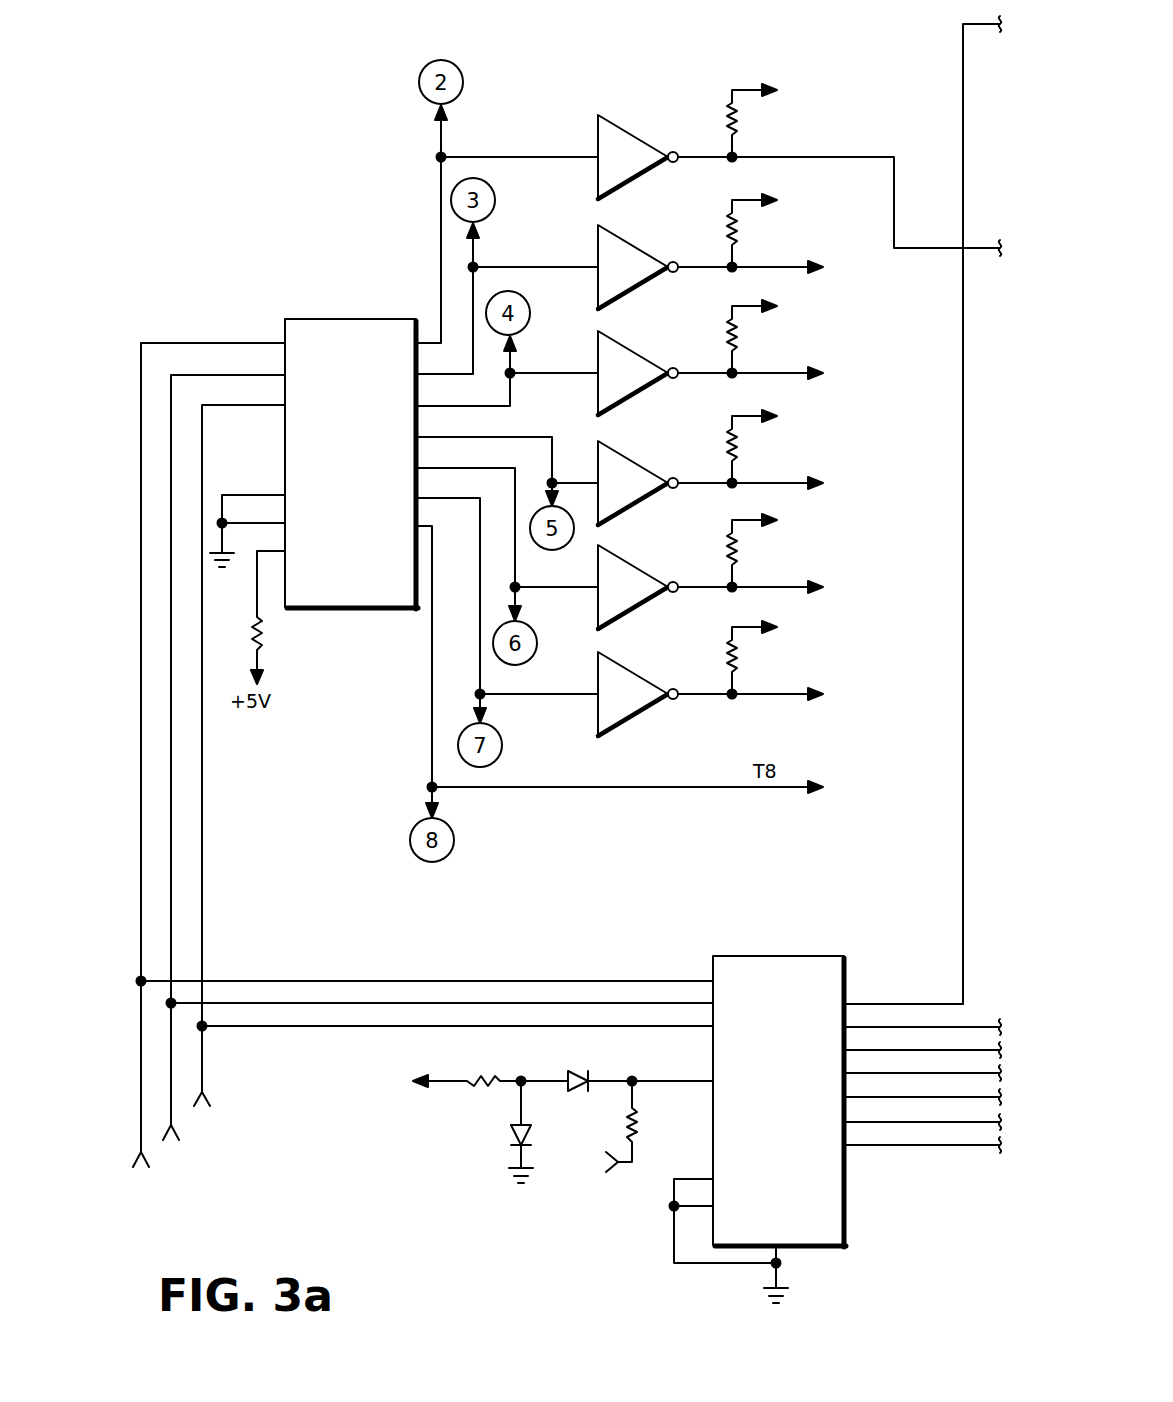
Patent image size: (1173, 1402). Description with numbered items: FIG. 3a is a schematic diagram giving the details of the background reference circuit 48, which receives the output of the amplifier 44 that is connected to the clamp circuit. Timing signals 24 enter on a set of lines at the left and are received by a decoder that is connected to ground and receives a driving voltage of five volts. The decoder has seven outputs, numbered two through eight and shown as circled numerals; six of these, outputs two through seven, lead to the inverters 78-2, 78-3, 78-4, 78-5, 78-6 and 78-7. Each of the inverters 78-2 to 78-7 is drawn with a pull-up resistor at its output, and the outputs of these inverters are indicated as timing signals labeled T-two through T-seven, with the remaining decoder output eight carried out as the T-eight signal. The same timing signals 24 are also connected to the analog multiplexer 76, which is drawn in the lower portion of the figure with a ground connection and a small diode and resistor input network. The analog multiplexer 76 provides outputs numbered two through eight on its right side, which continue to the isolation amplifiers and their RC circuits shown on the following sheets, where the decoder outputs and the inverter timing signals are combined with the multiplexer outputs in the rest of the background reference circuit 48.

The background reference circuit 48 is at (310, 86).
The inverter 78-2 is at (628, 126).
The inverter 78-3 is at (628, 236).
The inverter 78-4 is at (628, 342).
The inverter 78-5 is at (628, 452).
The inverter 78-6 is at (628, 556).
The inverter 78-7 is at (628, 663).
The analog multiplexer 76 is at (758, 956).
The timing signals 24 is at (141, 1085).
The amplifier 44 is at (619, 1167).